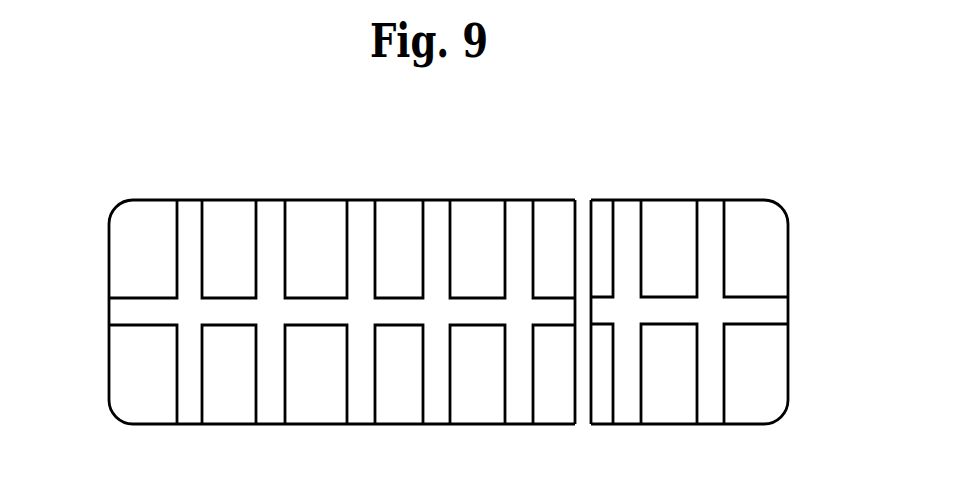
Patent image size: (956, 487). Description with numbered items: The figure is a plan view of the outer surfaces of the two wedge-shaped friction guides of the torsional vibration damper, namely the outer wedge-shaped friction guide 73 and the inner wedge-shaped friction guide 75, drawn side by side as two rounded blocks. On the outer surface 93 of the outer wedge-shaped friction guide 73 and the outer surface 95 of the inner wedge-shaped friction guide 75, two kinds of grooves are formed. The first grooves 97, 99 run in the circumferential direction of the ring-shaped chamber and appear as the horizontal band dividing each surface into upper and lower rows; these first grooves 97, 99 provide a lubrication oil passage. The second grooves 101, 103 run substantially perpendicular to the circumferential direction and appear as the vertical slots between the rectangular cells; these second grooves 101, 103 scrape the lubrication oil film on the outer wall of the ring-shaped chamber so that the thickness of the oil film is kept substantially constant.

The outer wedge-shaped friction guide 73 is at (316, 304).
The inner wedge-shaped friction guide 75 is at (716, 302).
The outer surface 93 is at (109, 258).
The first groove 97 is at (109, 314).
The outer surface 95 is at (788, 250).
The first groove 99 is at (788, 308).
The second groove 101 is at (187, 418).
The second groove 103 is at (712, 417).